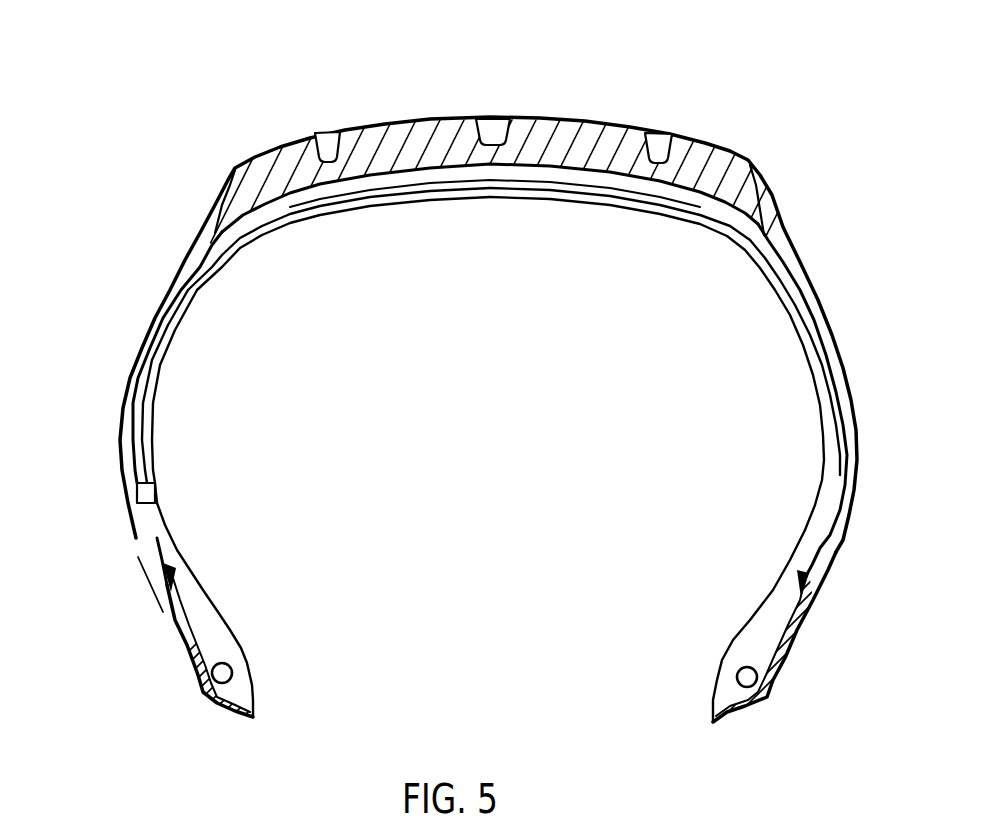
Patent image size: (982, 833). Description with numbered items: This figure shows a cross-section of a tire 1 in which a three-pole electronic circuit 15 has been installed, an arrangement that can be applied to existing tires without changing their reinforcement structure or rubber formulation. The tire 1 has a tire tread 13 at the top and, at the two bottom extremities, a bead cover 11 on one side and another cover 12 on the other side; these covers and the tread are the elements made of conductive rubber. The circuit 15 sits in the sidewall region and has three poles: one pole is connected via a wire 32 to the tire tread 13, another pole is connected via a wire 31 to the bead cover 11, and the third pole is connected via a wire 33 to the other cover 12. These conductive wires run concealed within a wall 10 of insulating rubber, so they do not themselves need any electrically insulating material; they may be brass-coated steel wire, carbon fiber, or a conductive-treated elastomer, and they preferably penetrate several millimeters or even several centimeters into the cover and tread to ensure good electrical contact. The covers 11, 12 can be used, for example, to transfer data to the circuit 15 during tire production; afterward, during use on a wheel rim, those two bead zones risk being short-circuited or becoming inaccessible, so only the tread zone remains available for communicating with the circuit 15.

The tire 1 is at (613, 104).
The wall 10 is at (112, 382).
The cover 11 is at (160, 629).
The cover 12 is at (814, 635).
The tire tread 13 is at (378, 115).
The electronic circuit 15 is at (172, 487).
The wire 31 is at (150, 542).
The wire 32 is at (152, 293).
The wire 33 is at (790, 322).